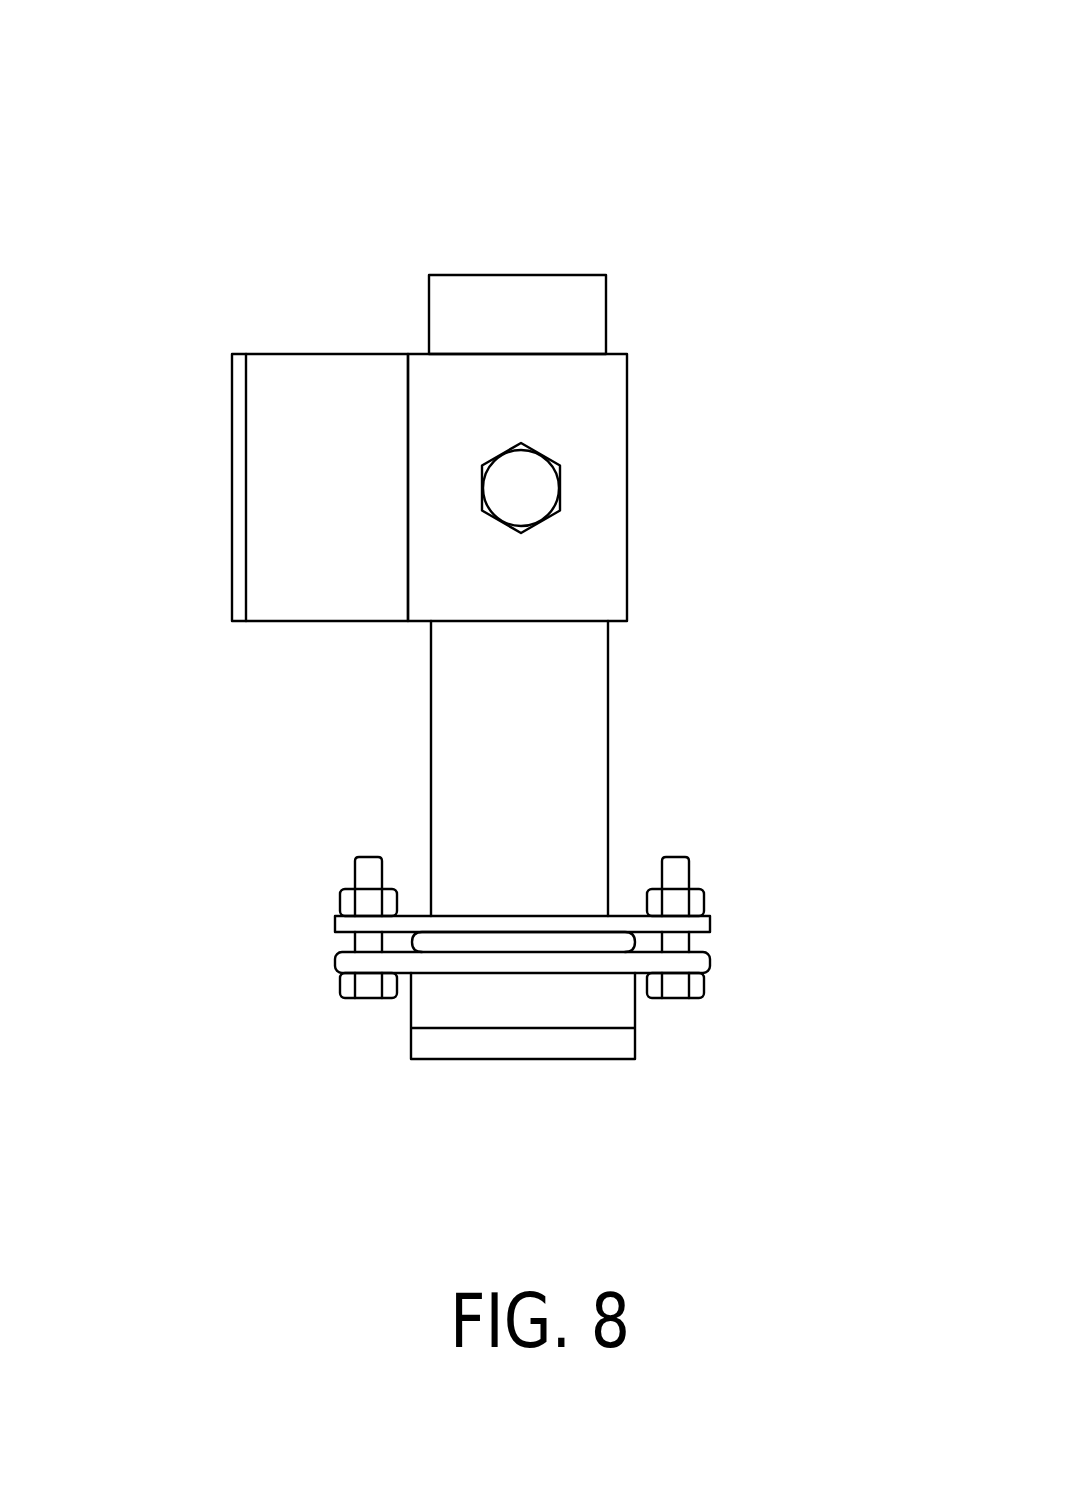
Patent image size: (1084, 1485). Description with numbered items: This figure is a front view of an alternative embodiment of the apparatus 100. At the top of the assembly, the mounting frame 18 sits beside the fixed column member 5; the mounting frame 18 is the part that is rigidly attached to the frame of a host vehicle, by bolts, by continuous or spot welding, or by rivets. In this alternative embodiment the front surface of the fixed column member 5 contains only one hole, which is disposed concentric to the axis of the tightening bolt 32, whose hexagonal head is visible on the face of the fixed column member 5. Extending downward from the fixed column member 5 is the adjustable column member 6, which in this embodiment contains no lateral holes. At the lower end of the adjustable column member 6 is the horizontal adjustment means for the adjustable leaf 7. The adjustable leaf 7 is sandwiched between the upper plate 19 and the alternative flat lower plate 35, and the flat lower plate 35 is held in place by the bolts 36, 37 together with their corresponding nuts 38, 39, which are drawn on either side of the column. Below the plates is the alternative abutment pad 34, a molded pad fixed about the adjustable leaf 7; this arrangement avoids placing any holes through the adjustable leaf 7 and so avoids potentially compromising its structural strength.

The apparatus 100 is at (463, 253).
The fixed column member 5 is at (577, 414).
The mounting frame 18 is at (330, 478).
The tightening bolt 32 is at (522, 487).
The adjustable column member 6 is at (445, 697).
The bolt 37 is at (367, 872).
The bolt 36 is at (682, 870).
The nut 39 is at (365, 902).
The nut 38 is at (673, 902).
The upper plate 19 is at (687, 922).
The adjustable leaf 7 is at (450, 944).
The flat lower plate 35 is at (678, 963).
The abutment pad 34 is at (448, 1043).